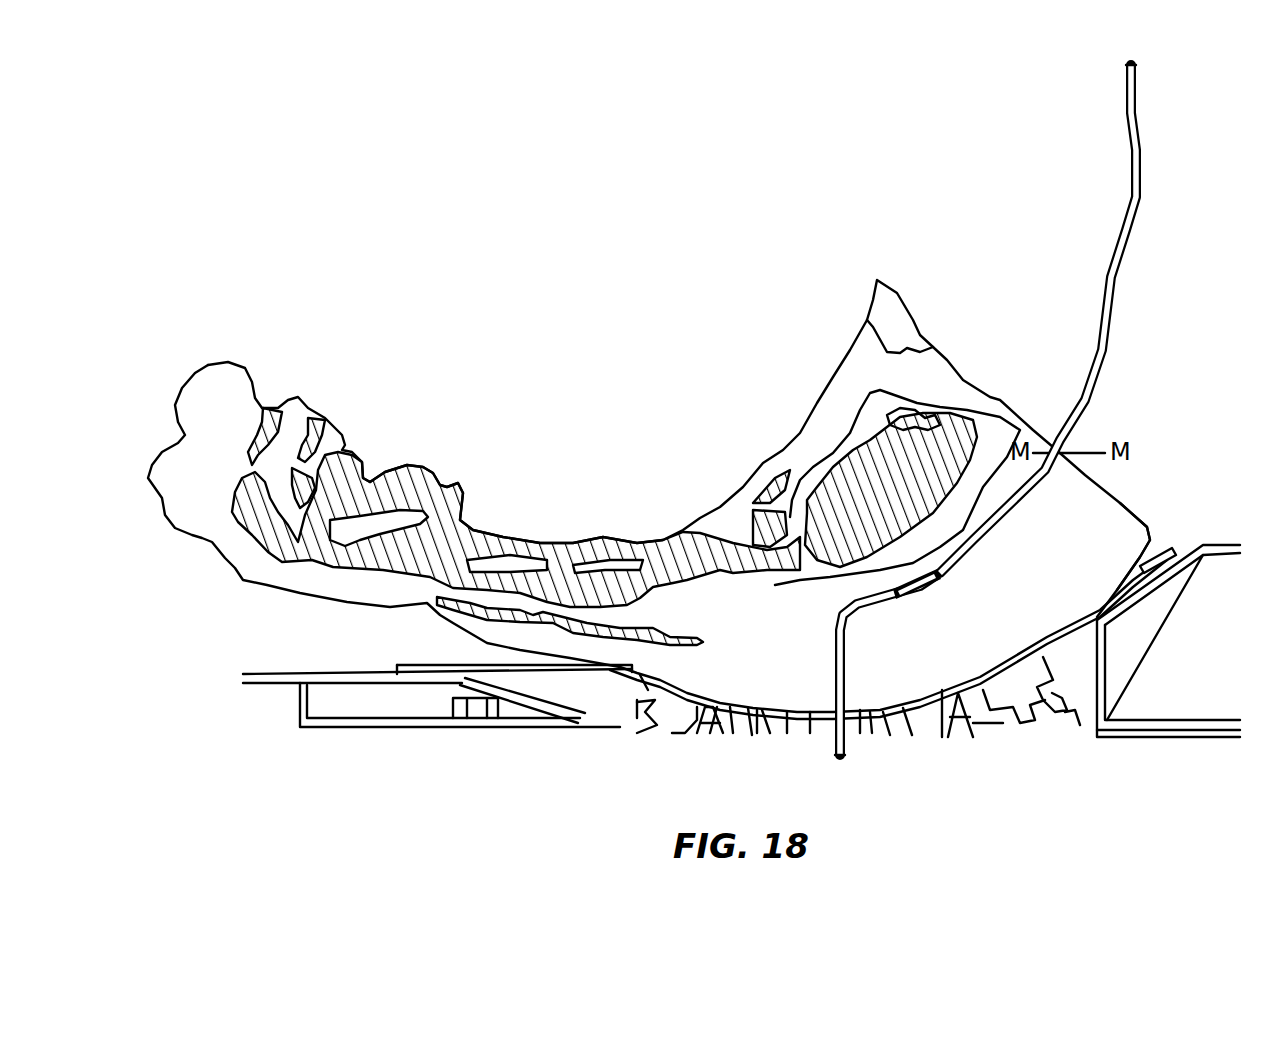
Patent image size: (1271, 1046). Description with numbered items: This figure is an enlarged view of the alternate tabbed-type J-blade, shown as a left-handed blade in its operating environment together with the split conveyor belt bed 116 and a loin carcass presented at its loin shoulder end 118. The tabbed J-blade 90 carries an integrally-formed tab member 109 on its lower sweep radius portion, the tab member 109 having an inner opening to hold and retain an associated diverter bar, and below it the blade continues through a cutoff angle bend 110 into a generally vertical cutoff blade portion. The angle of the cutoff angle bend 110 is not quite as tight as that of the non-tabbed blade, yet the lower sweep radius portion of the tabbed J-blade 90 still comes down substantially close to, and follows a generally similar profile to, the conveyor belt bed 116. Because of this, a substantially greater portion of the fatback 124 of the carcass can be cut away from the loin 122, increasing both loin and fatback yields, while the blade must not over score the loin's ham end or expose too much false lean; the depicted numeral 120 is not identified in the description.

The tabbed J-blade 90 is at (1142, 232).
The tab member 109 is at (935, 584).
The cutoff angle bend 110 is at (853, 618).
The split conveyor belt bed 116 is at (432, 665).
The loin shoulder end 118 is at (1032, 420).
The marrow region 120 is at (737, 565).
The loin 122 is at (920, 447).
The fatback 124 is at (1117, 523).